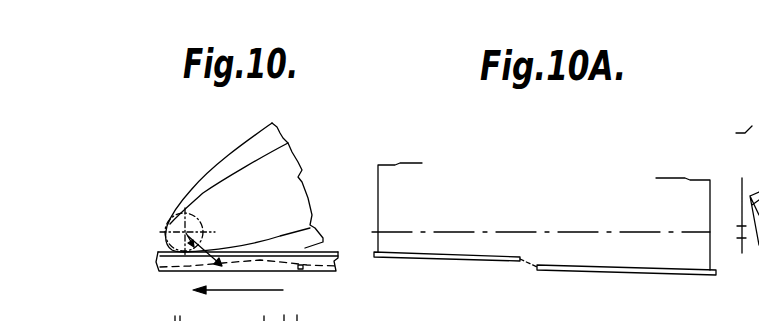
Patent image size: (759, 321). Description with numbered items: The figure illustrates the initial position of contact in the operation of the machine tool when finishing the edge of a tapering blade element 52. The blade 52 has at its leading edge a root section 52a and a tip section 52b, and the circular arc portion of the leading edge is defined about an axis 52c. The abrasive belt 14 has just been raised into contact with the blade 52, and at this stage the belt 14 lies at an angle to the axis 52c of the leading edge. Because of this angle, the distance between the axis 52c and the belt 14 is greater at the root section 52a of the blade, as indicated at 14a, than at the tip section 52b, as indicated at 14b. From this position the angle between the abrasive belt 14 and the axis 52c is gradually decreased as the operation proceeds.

In FIG. 10, the tapering blade element 52 is at (299, 176).
In FIG. 10, the root section 52a is at (236, 142).
In FIG. 10A, the root section 52a is at (710, 219).
In FIG. 10, the tip section 52b is at (202, 192).
In FIG. 10A, the tip section 52b is at (378, 193).
In FIG. 10A, the axis of the circular arc portion of the leading edge 52c is at (517, 233).
In FIG. 10A, the abrasive belt 14 is at (552, 271).
In FIG. 10, the belt spacing at the root section 14a is at (298, 272).
In FIG. 10, the belt spacing at the tip section 14b is at (314, 255).